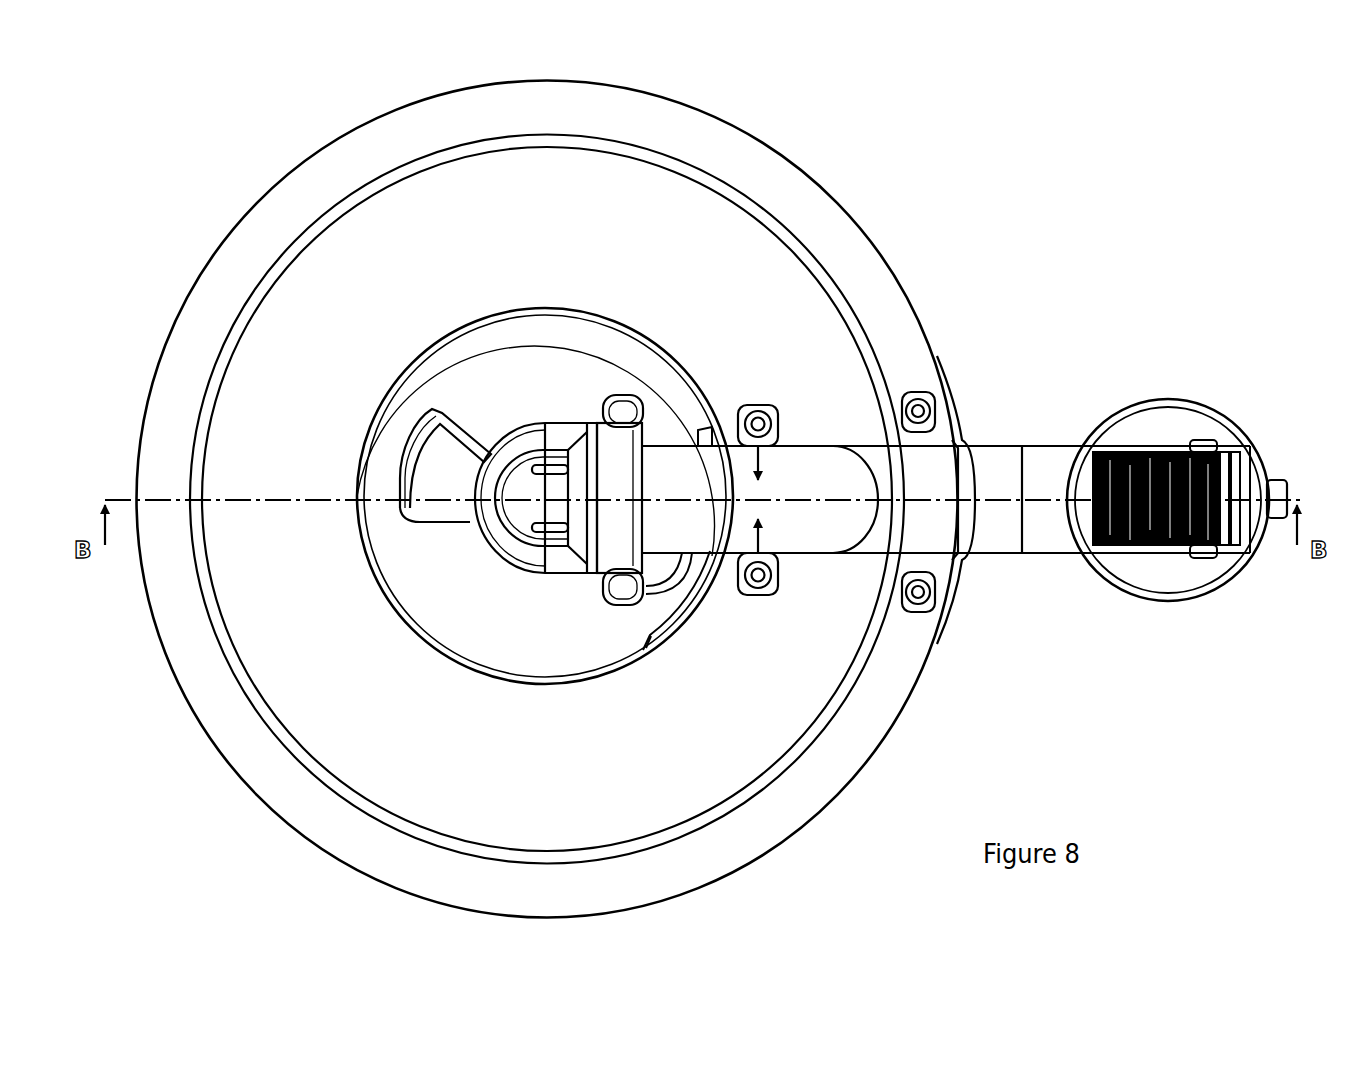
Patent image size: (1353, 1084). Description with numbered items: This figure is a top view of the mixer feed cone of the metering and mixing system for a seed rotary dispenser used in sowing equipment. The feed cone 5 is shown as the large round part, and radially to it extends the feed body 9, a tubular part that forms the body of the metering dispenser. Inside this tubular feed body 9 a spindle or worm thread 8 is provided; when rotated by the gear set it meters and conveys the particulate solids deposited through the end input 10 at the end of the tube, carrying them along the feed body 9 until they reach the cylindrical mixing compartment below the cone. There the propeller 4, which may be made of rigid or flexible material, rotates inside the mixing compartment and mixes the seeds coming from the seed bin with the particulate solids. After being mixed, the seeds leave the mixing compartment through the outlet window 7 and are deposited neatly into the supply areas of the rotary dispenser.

The propeller 4 is at (430, 470).
The feed cone 5 is at (322, 290).
The outlet window 7 is at (693, 608).
The worm thread 8 is at (1115, 540).
The feed body 9 is at (998, 476).
The end input 10 is at (1143, 440).